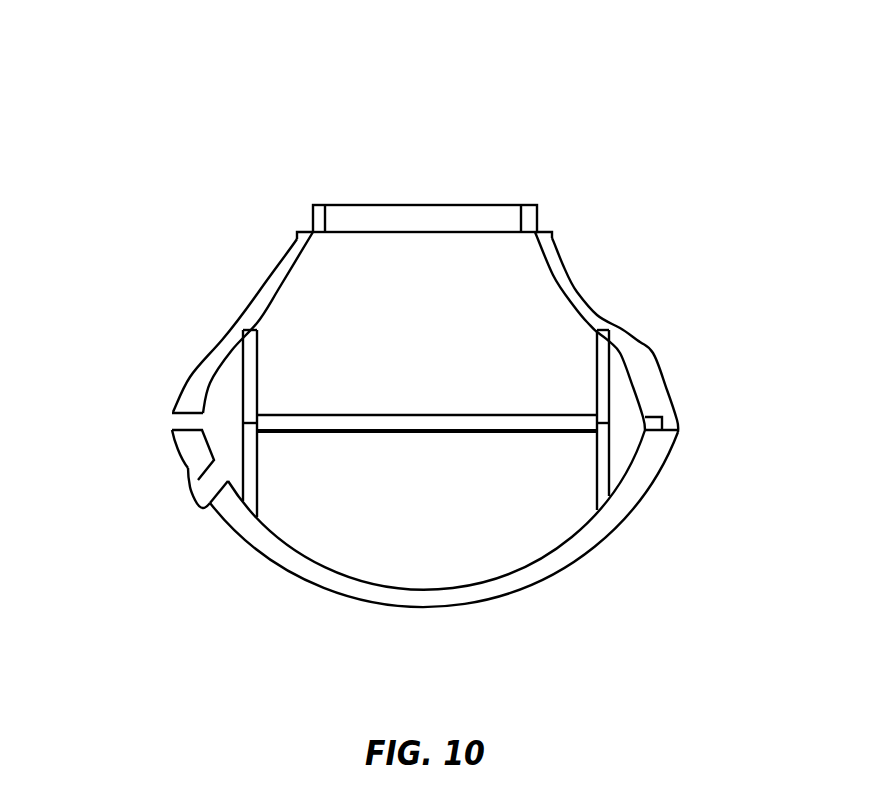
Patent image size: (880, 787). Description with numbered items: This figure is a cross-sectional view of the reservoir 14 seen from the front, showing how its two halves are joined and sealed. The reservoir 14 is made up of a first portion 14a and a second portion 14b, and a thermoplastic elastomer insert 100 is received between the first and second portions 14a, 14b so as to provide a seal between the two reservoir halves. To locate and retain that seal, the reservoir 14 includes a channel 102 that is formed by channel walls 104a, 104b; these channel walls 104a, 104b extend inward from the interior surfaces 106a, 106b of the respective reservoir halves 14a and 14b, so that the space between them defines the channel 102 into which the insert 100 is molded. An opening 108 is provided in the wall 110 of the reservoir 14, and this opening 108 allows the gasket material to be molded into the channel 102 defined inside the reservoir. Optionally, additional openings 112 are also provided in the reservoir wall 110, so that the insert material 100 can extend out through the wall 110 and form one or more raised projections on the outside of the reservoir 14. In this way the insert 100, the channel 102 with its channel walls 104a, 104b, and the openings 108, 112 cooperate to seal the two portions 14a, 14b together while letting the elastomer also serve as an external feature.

The reservoir 14 is at (149, 76).
The first portion 14a is at (278, 257).
The second portion 14b is at (637, 503).
The thermoplastic elastomer insert 100 is at (227, 410).
The channel 102 is at (627, 418).
The channel wall 104a is at (595, 387).
The channel wall 104b is at (595, 480).
The interior surface 106a is at (285, 278).
The interior surface 106b is at (273, 530).
The opening 108 is at (187, 420).
The wall 110 is at (260, 537).
The additional openings 112 is at (197, 500).